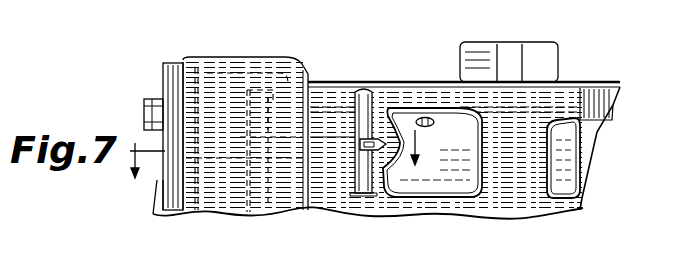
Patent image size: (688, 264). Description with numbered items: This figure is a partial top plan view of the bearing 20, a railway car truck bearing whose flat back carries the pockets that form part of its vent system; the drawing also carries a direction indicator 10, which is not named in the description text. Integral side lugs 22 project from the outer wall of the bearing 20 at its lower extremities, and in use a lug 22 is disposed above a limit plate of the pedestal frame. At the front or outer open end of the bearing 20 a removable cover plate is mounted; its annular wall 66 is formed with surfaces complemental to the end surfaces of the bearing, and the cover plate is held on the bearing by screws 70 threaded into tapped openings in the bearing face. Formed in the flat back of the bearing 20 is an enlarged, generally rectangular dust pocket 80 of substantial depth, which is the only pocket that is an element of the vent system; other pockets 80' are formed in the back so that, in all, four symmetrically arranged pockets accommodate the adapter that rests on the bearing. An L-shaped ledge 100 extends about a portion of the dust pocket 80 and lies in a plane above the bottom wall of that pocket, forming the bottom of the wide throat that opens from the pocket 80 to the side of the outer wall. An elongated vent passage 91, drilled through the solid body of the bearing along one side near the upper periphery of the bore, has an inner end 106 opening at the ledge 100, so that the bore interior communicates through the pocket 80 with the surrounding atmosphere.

The axial direction arrow 10 is at (278, 164).
The bearing 20 is at (309, 62).
The side lugs 22 is at (560, 56).
The annular wall 66 is at (173, 63).
The screws 70 is at (145, 99).
The dust pocket 80 is at (438, 178).
The pockets 80' is at (587, 163).
The vent passage 91 is at (283, 152).
The L-shaped ledge 100 is at (372, 106).
The inner end 106 is at (358, 168).